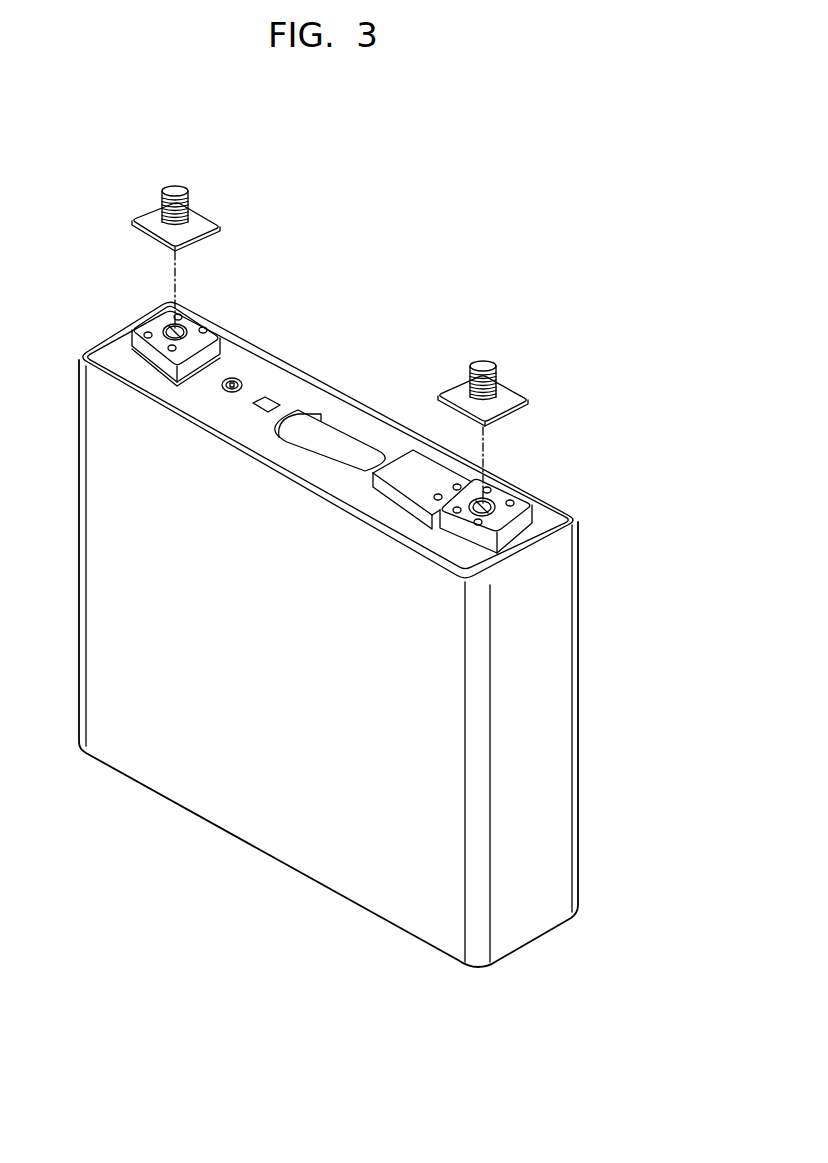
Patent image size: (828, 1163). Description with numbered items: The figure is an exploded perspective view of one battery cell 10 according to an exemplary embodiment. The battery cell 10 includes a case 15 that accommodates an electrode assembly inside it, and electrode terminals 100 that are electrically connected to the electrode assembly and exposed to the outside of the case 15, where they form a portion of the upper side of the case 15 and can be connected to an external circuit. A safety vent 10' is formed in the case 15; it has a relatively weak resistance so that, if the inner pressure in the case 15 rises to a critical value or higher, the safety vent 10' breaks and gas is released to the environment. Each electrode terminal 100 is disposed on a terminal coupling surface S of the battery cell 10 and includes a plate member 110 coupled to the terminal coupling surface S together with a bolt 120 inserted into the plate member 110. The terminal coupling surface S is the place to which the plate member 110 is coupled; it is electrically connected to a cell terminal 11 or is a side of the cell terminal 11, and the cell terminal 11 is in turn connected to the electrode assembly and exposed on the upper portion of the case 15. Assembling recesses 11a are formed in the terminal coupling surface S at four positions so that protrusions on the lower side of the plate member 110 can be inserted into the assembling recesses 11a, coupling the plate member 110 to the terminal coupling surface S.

The battery cell 10 is at (370, 634).
The safety vent 10' is at (338, 401).
The cell terminal 11 is at (369, 427).
The assembling recesses 11a is at (205, 330).
The case 15 is at (550, 722).
The electrode terminal 100 is at (388, 322).
The plate member 110 is at (218, 220).
The bolt 120 is at (188, 192).
The terminal coupling surface S is at (348, 396).